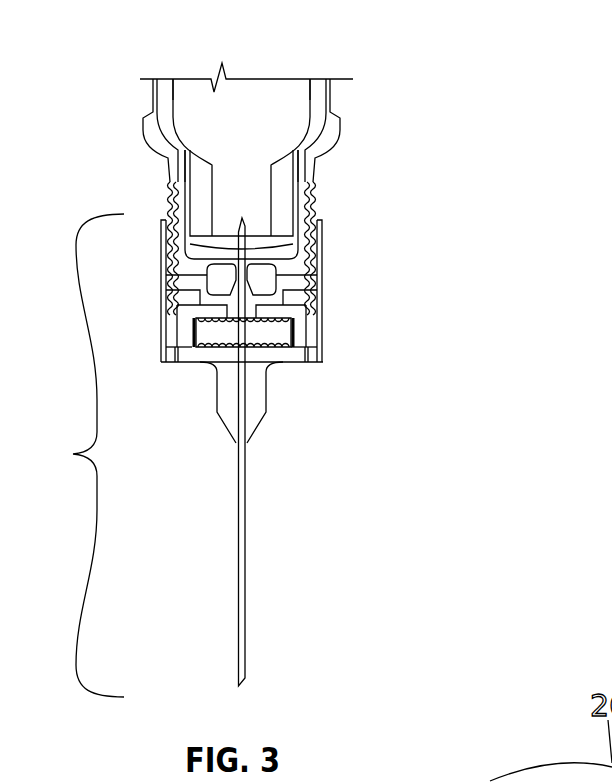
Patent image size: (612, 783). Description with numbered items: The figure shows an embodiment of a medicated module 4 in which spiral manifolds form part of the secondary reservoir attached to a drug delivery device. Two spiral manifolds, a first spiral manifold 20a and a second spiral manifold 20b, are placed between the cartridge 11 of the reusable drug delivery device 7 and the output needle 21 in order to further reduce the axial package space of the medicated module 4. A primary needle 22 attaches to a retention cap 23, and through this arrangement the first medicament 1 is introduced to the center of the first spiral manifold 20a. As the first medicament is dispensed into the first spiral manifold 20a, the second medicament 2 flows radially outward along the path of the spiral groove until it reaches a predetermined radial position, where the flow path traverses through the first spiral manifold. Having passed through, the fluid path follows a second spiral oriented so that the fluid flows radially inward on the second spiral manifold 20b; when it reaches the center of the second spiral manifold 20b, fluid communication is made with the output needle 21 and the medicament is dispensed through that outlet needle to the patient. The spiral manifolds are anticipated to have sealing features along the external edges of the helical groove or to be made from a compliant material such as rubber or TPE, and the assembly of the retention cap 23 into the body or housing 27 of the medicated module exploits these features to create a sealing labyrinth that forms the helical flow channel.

The first medicament 1 is at (293, 97).
The cartridge 11 is at (318, 85).
The reusable drug delivery device 7 is at (323, 153).
The primary needle 22 is at (293, 248).
The first spiral manifold 20a is at (283, 295).
The second spiral manifold 20b is at (278, 345).
The retention cap 23 is at (265, 319).
The housing 27 is at (315, 333).
The second medicament 2 is at (267, 367).
The output needle 21 is at (258, 560).
The medicated module 4 is at (87, 455).